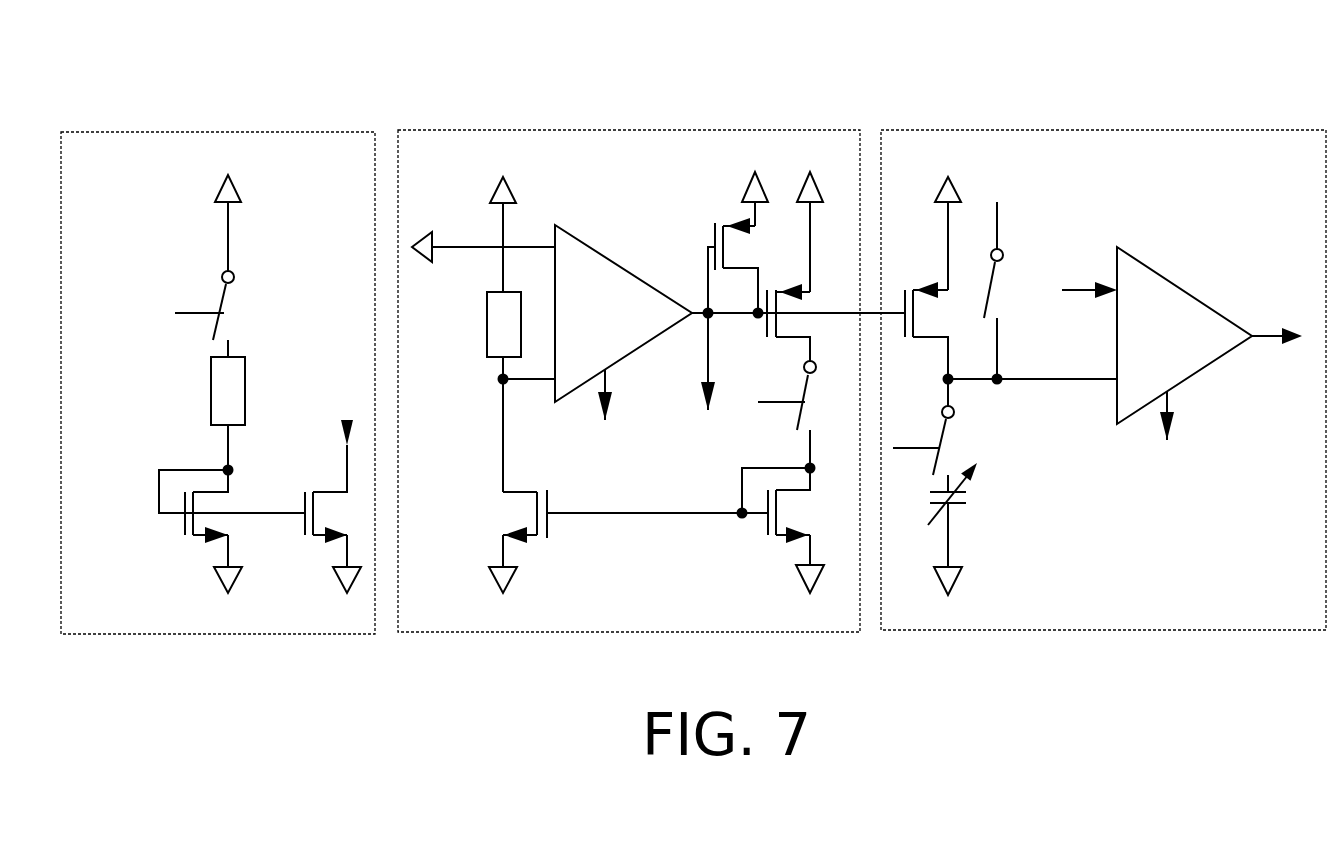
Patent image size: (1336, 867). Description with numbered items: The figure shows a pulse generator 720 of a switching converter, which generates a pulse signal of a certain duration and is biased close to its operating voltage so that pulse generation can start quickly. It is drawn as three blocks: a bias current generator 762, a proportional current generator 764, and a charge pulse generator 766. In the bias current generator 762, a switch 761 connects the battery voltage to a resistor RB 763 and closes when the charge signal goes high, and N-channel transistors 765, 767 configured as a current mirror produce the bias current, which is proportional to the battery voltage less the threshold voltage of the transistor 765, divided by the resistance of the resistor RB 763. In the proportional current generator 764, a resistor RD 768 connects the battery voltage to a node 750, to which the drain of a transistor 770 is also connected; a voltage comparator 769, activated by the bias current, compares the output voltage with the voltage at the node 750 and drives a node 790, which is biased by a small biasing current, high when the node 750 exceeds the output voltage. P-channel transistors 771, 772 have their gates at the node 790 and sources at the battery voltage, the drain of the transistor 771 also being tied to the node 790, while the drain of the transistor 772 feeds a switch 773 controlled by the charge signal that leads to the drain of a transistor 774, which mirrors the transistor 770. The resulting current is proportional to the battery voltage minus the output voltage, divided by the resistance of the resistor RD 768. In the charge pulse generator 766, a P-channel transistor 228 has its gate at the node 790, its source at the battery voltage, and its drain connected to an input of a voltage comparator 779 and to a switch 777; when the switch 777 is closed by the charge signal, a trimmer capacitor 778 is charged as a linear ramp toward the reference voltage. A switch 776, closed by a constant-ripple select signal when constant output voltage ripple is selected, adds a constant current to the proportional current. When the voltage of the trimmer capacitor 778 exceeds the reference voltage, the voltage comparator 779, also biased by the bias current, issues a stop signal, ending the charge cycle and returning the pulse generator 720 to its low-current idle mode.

The pulse generator 720 is at (193, 36).
The bias current generator 762 is at (218, 360).
The switch 761 is at (242, 305).
The resistor RB 763 is at (260, 389).
The transistor 765 is at (191, 531).
The transistor 767 is at (317, 491).
The proportional current generator 764 is at (651, 359).
The resistor RD 768 is at (473, 325).
The voltage comparator 769 is at (623, 335).
The node 750 is at (473, 390).
The transistor 770 is at (527, 541).
The transistor 771 is at (729, 249).
The transistor 772 is at (784, 281).
The switch 773 is at (806, 395).
The transistor 774 is at (771, 530).
The node 790 is at (692, 376).
The charge pulse generator 766 is at (1103, 358).
The transistor 228 is at (925, 308).
The switch 776 is at (1021, 283).
The switch 777 is at (950, 427).
The trimmer capacitor 778 is at (985, 529).
The voltage comparator 779 is at (1209, 358).